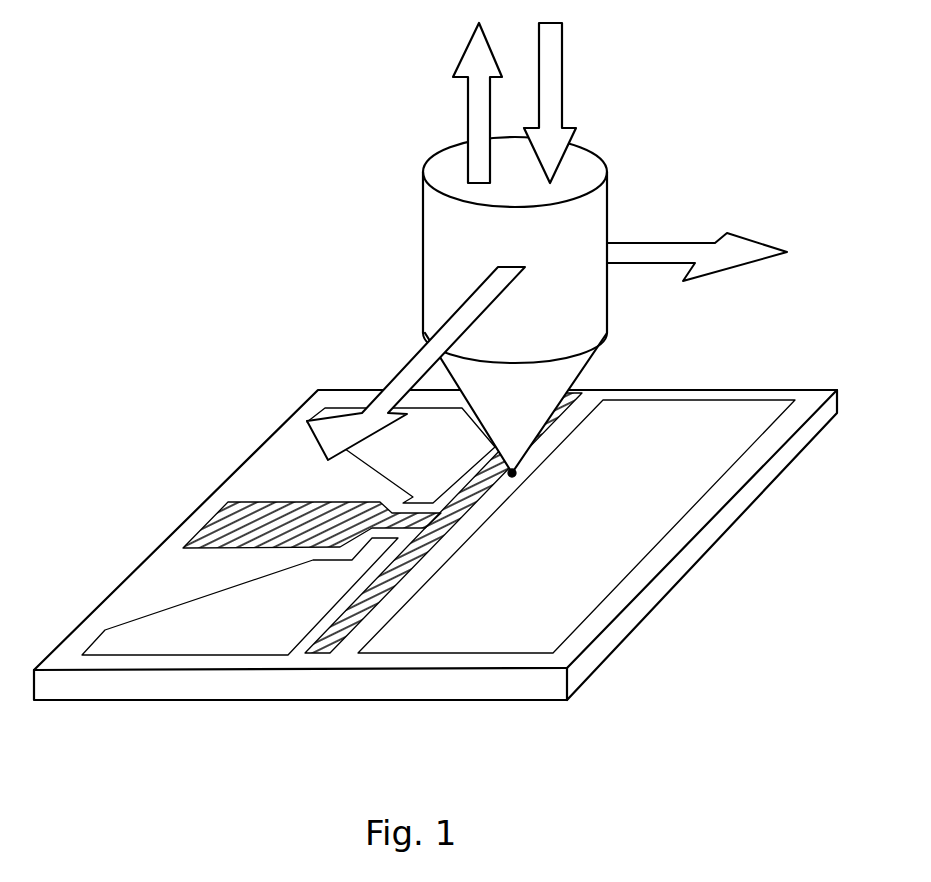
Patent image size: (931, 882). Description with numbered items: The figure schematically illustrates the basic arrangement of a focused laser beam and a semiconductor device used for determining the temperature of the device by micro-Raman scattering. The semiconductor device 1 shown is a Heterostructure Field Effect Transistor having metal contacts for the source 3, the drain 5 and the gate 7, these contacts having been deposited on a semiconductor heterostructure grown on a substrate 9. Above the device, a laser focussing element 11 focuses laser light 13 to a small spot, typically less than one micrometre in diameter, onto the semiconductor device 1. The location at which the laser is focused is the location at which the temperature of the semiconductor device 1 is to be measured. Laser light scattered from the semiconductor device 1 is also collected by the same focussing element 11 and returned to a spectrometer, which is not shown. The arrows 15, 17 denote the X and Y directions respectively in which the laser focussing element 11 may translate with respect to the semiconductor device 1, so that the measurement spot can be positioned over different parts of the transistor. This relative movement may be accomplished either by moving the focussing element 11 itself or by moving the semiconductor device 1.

The semiconductor device 1 is at (703, 626).
The source 3 is at (325, 408).
The drain 5 is at (728, 417).
The gate 7 is at (225, 527).
The substrate 9 is at (770, 475).
The laser focussing element 11 is at (585, 218).
The laser light 13 is at (562, 53).
The arrow denoting X direction 15 is at (642, 257).
The arrow denoting Y direction 17 is at (487, 297).